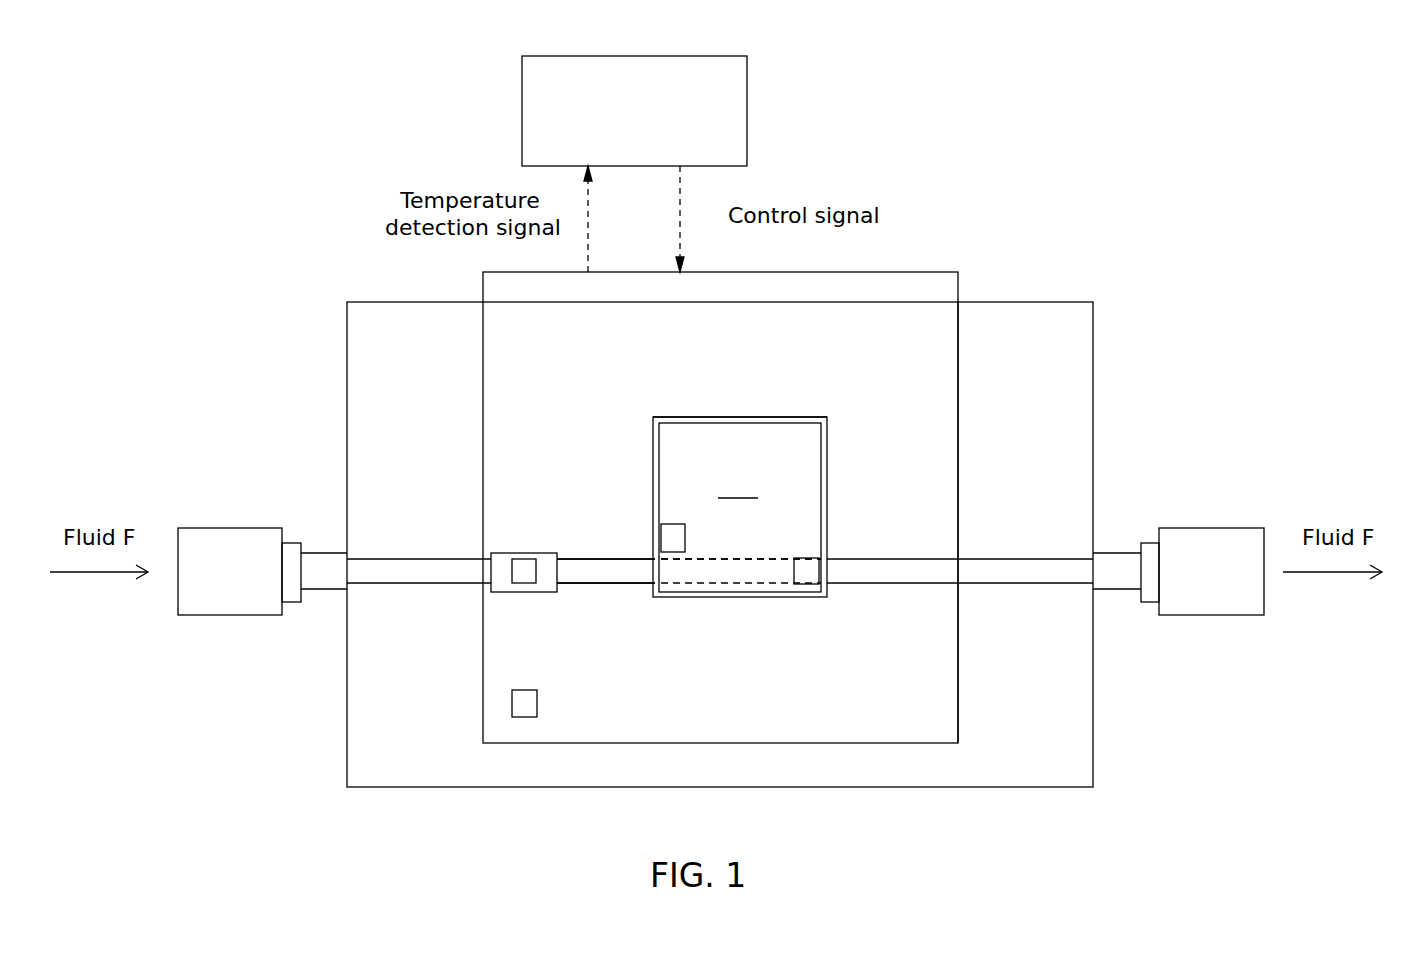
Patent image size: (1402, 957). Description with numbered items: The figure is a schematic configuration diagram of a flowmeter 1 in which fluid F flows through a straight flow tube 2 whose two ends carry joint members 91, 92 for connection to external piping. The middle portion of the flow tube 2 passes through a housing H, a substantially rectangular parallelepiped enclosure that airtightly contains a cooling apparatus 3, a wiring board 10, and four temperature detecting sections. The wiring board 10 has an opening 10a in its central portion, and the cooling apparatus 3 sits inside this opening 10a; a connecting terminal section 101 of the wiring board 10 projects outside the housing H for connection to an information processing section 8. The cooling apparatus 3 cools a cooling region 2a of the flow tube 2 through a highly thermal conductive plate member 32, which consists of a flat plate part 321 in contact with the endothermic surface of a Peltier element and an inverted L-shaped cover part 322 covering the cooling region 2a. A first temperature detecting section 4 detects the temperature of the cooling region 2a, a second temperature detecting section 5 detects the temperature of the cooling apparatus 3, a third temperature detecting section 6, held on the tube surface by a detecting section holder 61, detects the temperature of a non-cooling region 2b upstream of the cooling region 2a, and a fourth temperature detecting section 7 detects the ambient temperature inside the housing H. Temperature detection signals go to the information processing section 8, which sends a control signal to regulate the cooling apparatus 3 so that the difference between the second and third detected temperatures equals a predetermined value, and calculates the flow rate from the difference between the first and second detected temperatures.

The flowmeter 1 is at (380, 168).
The flow tube 2 is at (900, 559).
The cooling region 2a is at (753, 588).
The non-cooling region 2b is at (572, 590).
The cooling apparatus 3 is at (711, 518).
The plate member 32 is at (750, 422).
The flat plate part 321 is at (738, 486).
The cover part 322 is at (697, 592).
The first temperature detecting section 4 is at (806, 595).
The second temperature detecting section 5 is at (668, 524).
The third temperature detecting section 6 is at (497, 531).
The detecting section holder 61 is at (500, 553).
The fourth temperature detecting section 7 is at (512, 697).
The information processing section 8 is at (747, 114).
The wiring board 10 is at (958, 422).
The opening 10a is at (805, 418).
The connecting terminal section 101 is at (900, 272).
The joint member 91 is at (228, 528).
The joint member 92 is at (1210, 528).
The housing H is at (347, 348).